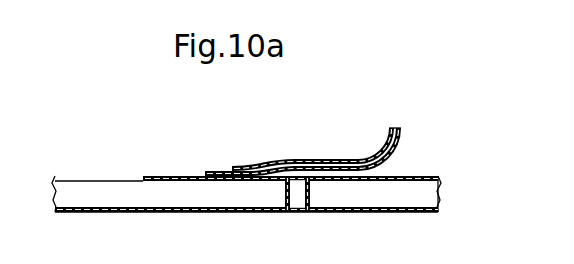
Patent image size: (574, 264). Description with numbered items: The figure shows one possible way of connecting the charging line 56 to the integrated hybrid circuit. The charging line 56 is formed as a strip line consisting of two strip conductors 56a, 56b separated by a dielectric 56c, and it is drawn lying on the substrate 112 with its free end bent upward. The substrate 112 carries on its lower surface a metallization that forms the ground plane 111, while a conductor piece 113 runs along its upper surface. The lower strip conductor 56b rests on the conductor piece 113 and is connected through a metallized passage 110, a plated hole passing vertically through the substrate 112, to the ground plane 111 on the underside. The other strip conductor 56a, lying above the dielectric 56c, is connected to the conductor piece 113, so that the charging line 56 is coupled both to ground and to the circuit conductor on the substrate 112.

The charging line 56 is at (334, 137).
The strip conductor 56a is at (297, 158).
The strip conductor 56b is at (403, 158).
The dielectric 56c is at (405, 130).
The metallized passage 110 is at (297, 202).
The ground plane 111 is at (233, 212).
The substrate 112 is at (97, 188).
The conductor piece 113 is at (168, 176).